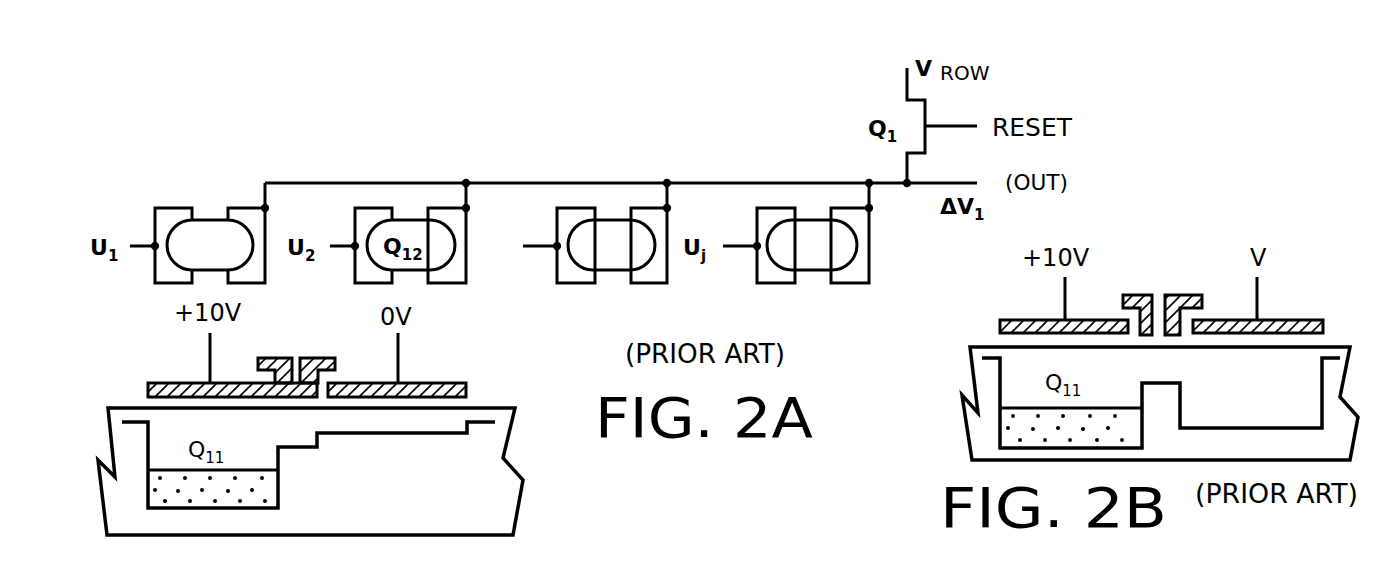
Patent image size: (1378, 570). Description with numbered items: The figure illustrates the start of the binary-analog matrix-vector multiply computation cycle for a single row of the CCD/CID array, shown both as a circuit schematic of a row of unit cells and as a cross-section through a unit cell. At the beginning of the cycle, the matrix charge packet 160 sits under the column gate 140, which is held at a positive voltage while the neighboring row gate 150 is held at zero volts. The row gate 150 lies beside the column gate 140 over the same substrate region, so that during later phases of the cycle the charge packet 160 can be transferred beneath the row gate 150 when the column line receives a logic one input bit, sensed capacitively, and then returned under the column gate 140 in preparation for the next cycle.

The column gate 140 is at (153, 270).
The row gate 150 is at (442, 208).
The matrix charge packet 160 is at (205, 220).